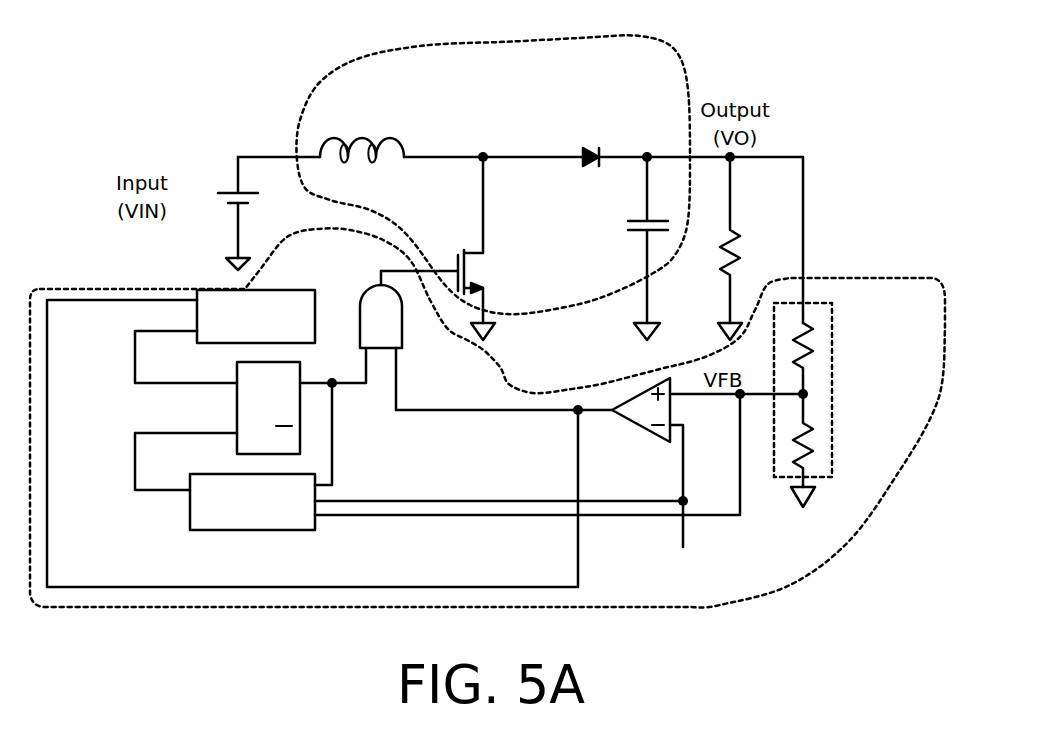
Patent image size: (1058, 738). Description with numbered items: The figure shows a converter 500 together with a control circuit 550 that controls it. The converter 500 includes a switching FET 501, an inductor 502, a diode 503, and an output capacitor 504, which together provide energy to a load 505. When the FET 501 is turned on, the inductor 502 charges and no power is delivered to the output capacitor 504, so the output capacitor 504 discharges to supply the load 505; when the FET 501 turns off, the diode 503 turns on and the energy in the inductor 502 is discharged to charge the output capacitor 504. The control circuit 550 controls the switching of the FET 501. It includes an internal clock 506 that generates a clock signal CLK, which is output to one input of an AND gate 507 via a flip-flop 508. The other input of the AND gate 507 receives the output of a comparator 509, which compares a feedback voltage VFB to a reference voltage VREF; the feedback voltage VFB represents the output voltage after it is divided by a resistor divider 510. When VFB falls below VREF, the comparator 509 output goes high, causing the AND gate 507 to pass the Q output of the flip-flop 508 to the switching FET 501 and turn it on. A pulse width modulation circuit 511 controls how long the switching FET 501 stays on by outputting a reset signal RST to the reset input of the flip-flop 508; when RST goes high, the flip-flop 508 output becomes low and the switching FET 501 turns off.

The converter 500 is at (670, 65).
The switching FET 501 is at (484, 248).
The inductor 502 is at (373, 137).
The diode 503 is at (591, 140).
The output capacitor 504 is at (633, 237).
The load 505 is at (718, 262).
The internal clock 506 is at (287, 290).
The AND gate 507 is at (402, 330).
The flip-flop 508 is at (300, 433).
The comparator 509 is at (645, 428).
The resistor divider 510 is at (833, 337).
The pulse width modulation circuit 511 is at (287, 530).
The control circuit 550 is at (160, 605).